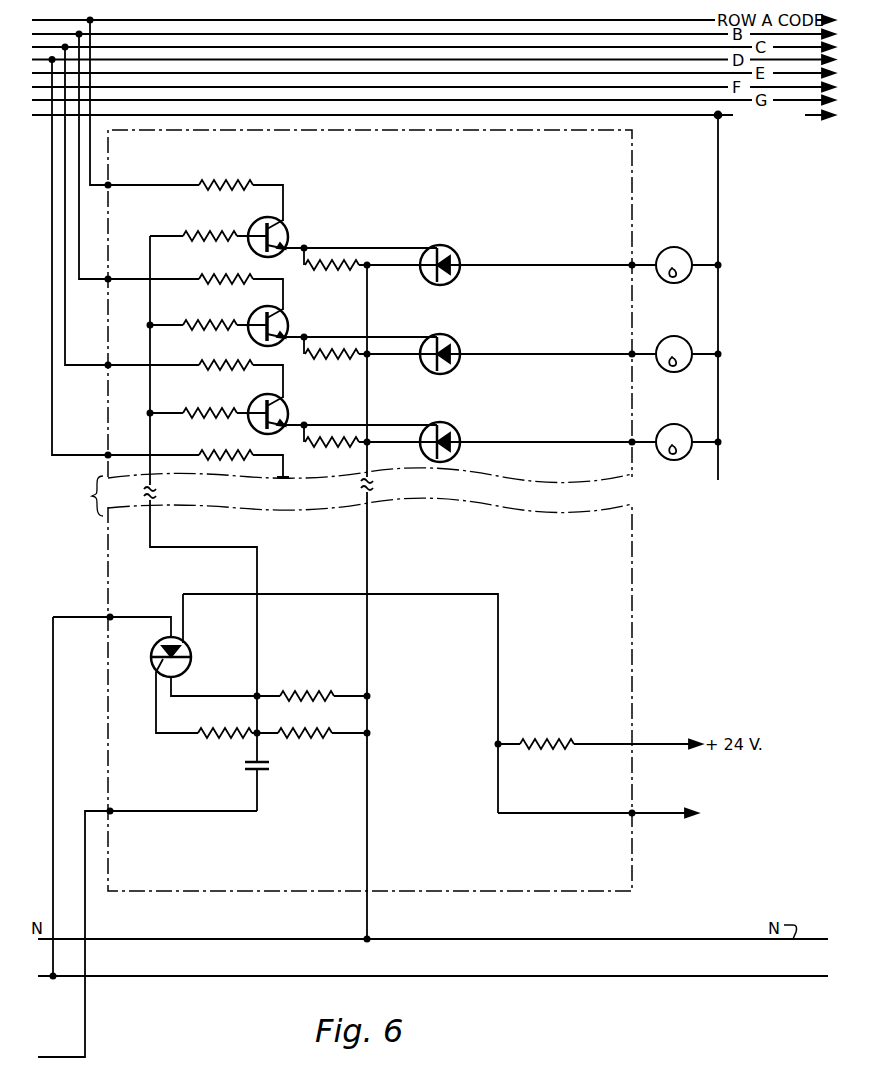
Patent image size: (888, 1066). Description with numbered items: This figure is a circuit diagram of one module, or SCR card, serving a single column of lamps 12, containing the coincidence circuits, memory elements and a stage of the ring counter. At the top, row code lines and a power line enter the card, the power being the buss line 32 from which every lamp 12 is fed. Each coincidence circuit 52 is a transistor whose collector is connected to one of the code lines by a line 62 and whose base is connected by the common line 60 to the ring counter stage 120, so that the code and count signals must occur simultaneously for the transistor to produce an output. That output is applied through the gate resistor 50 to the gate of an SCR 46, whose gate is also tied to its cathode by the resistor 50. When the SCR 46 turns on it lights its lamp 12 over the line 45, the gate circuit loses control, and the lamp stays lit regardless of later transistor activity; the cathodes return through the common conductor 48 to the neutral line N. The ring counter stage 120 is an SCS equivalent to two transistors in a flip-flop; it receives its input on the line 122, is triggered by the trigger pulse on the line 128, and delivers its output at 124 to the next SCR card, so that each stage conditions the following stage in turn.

The lamp 12 is at (688, 254).
The buss line 32 is at (717, 116).
The line 45 is at (553, 264).
The SCR 46 is at (449, 247).
The conductor 48 is at (367, 667).
The resistor 50 is at (316, 273).
The coincidence circuit 52 is at (297, 231).
The line 60 is at (245, 547).
The line 62 is at (125, 185).
The ring counter stage 120 is at (217, 640).
The input line 122 is at (85, 815).
The output 124 is at (655, 813).
The line 128 is at (137, 977).